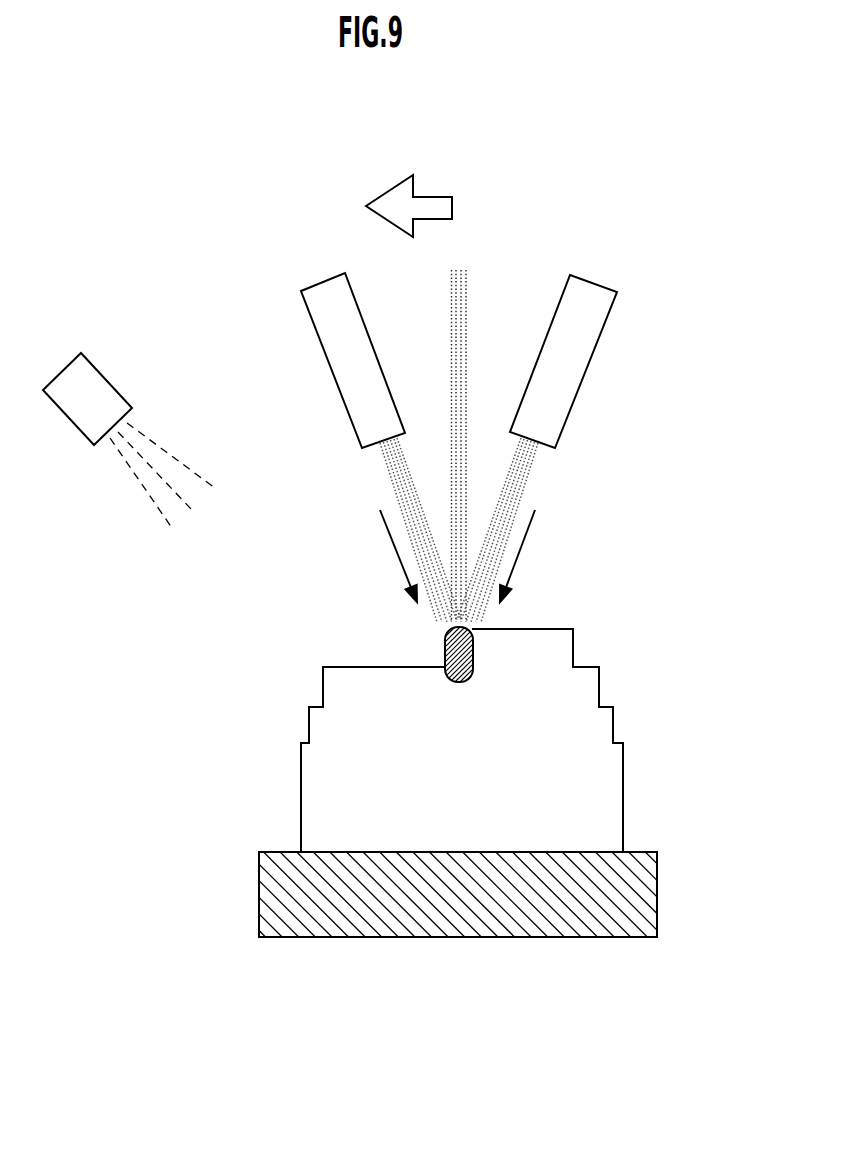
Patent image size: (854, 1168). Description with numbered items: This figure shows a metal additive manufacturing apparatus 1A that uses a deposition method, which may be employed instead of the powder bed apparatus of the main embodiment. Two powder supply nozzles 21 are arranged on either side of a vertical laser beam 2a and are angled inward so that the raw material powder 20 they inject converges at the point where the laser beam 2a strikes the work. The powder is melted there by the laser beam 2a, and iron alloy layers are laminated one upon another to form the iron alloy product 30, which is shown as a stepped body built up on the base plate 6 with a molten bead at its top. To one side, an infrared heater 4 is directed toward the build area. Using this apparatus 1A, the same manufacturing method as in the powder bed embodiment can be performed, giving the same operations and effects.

The metal additive manufacturing apparatus 1A is at (626, 162).
The laser beam 2a is at (488, 295).
The infrared heater 4 is at (62, 372).
The base plate 6 is at (633, 938).
The raw material powder 20 is at (383, 487).
The powder supply nozzle 21 is at (317, 287).
The iron alloy product 30 is at (350, 667).